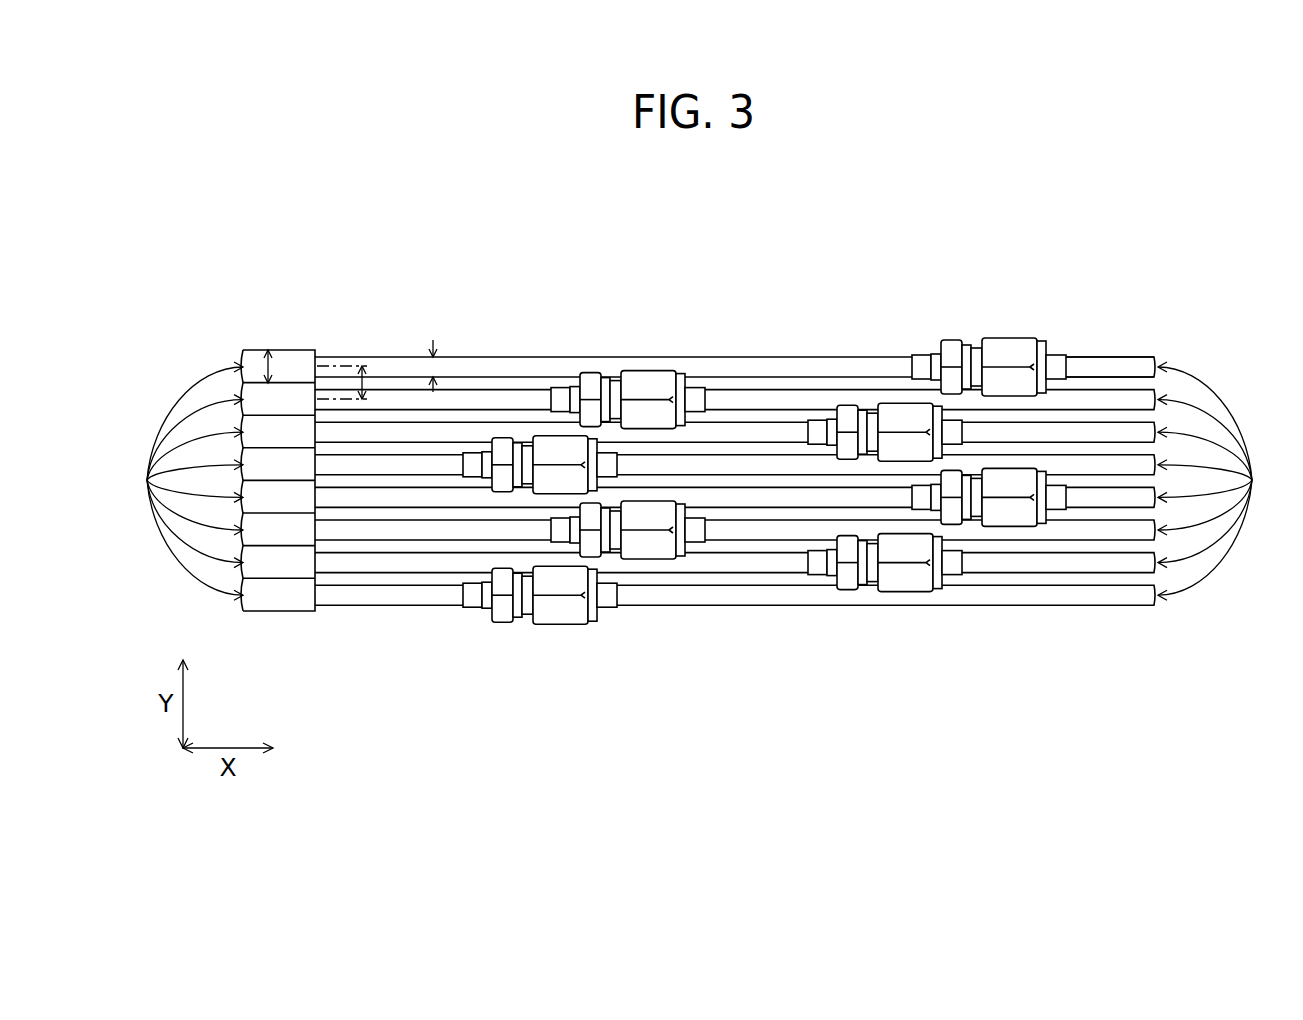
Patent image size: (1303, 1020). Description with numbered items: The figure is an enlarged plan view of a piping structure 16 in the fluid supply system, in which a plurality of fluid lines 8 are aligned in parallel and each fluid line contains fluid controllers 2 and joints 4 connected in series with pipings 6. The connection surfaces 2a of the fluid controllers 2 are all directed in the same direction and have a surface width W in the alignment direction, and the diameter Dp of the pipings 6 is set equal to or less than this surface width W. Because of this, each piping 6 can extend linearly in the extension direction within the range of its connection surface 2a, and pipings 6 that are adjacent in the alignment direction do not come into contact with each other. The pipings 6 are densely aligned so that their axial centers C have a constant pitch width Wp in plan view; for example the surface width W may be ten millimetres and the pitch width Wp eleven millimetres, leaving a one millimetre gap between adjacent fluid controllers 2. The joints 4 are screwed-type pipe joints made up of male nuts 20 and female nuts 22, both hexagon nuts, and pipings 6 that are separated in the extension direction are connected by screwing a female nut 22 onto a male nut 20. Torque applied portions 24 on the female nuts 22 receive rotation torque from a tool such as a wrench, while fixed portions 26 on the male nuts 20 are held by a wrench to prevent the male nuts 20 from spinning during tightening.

The fluid controller 2 is at (184, 481).
The connection surface 2a is at (317, 349).
The joint 4 is at (764, 493).
The piping 6 is at (535, 356).
The fluid line 8 is at (1218, 481).
The piping structure 16 is at (1098, 352).
The male nut 20 is at (494, 649).
The female nut 22 is at (569, 648).
The torque applied portion 24 is at (560, 595).
The fixed portion 26 is at (502, 595).
The surface width W is at (263, 361).
The pitch width Wp is at (364, 380).
The diameter Dp is at (437, 364).
The axial center C is at (350, 398).